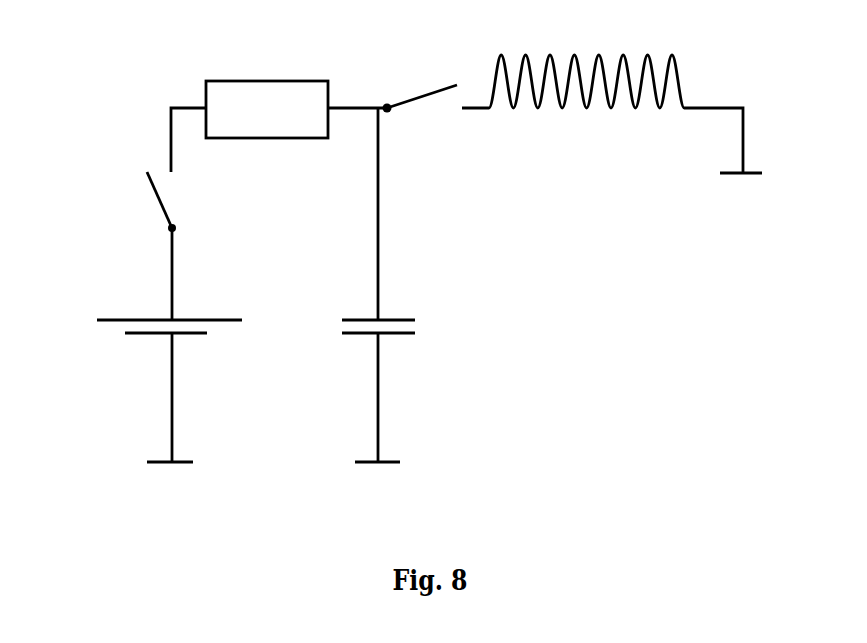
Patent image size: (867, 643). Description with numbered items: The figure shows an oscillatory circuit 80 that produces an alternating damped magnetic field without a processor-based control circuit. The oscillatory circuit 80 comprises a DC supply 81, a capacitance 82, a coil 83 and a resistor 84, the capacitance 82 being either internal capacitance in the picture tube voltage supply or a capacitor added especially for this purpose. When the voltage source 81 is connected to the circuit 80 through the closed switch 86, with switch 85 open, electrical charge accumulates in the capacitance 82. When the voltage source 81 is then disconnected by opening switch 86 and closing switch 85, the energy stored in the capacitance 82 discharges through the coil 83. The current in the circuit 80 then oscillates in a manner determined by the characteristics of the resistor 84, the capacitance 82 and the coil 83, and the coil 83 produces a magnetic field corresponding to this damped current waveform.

The oscillatory circuit 80 is at (97, 36).
The DC supply 81 is at (139, 389).
The capacitance 82 is at (405, 389).
The coil 83 is at (612, 89).
The resistor 84 is at (267, 92).
The switch 85 is at (420, 76).
The switch 86 is at (132, 202).